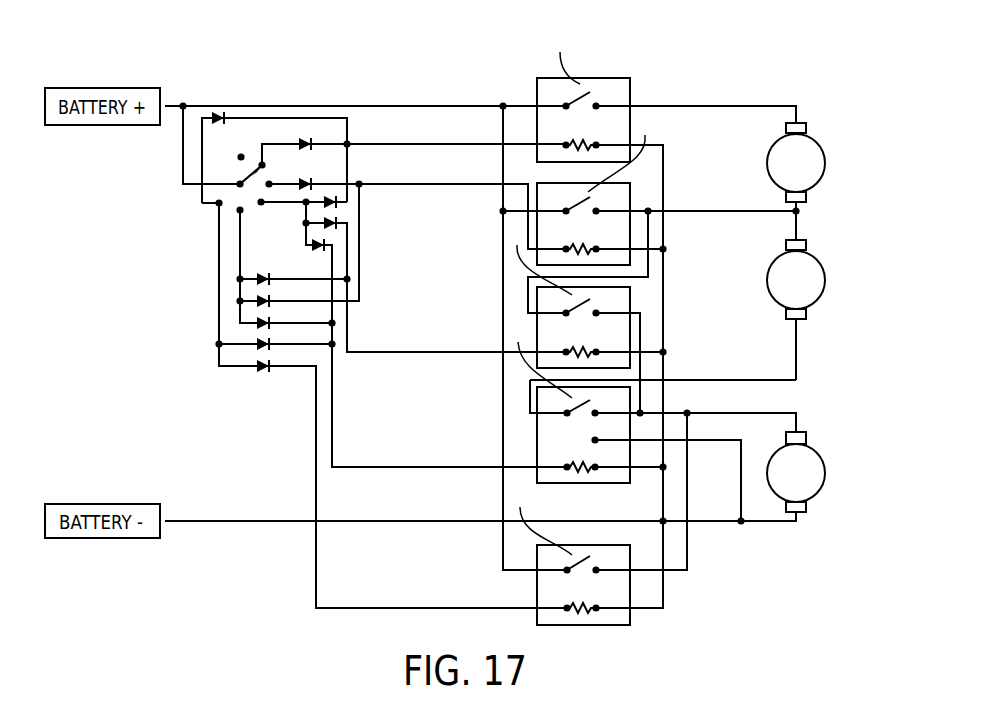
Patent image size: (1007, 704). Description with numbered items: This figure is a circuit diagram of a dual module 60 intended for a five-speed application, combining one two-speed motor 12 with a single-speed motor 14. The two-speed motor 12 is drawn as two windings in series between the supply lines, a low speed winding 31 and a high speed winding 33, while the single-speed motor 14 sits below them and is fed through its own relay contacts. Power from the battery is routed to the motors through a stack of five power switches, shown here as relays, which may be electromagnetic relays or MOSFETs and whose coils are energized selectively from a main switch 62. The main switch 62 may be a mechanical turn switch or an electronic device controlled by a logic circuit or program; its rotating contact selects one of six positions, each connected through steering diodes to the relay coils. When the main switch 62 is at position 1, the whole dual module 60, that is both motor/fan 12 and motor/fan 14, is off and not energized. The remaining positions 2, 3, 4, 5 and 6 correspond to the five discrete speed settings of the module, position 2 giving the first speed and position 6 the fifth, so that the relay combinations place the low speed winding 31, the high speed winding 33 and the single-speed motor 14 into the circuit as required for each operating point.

The dual module 60 is at (686, 69).
The main switch 62 is at (232, 204).
The two-speed motor 12 is at (838, 113).
The low speed winding 31 is at (768, 165).
The high speed winding 33 is at (768, 281).
The single-speed motor 14 is at (824, 474).
The main switch position 1 is at (241, 148).
The main switch position 2 is at (267, 160).
The main switch position 3 is at (277, 176).
The main switch position 4 is at (269, 213).
The main switch position 5 is at (246, 222).
The main switch position 6 is at (214, 215).